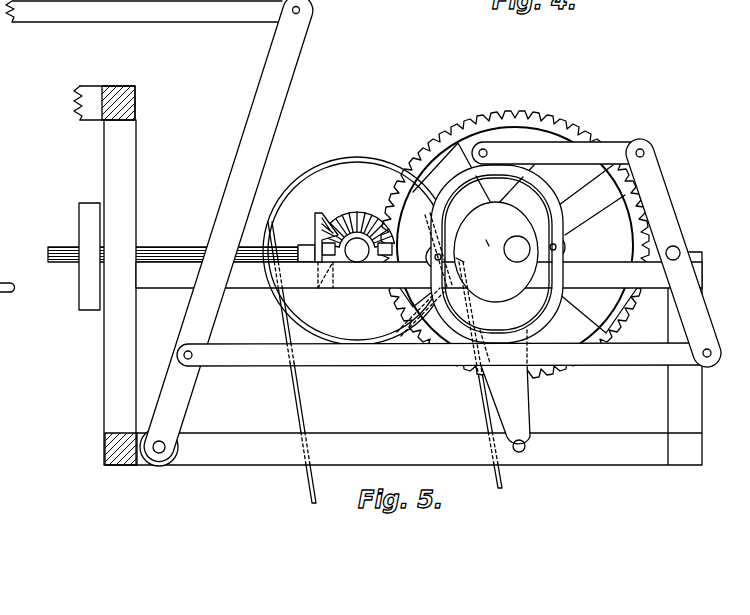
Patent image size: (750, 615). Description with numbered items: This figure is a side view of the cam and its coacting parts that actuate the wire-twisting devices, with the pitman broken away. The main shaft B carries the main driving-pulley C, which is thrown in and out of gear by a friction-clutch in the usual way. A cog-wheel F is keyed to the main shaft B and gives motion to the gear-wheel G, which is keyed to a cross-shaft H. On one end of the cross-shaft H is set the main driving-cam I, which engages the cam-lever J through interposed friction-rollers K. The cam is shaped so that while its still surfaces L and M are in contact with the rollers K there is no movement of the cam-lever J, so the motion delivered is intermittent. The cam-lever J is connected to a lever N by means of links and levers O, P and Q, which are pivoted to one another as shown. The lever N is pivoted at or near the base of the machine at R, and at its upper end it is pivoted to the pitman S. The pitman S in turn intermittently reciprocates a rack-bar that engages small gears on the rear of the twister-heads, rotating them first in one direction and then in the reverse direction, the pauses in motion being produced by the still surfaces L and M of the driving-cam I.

The pitman S is at (156, 12).
The lever N is at (226, 233).
The pivot R is at (174, 449).
The lever Q is at (447, 354).
The lever P is at (673, 253).
The link O is at (561, 153).
The gear-wheel G is at (515, 241).
The main driving-pulley C is at (387, 165).
The cog-wheel F is at (354, 222).
The main shaft B is at (356, 255).
The cam-lever J is at (544, 191).
The friction-rollers K is at (497, 250).
The cross-shaft H is at (496, 252).
The still surface L is at (520, 236).
The main driving-cam I is at (482, 239).
The still surface M is at (467, 264).